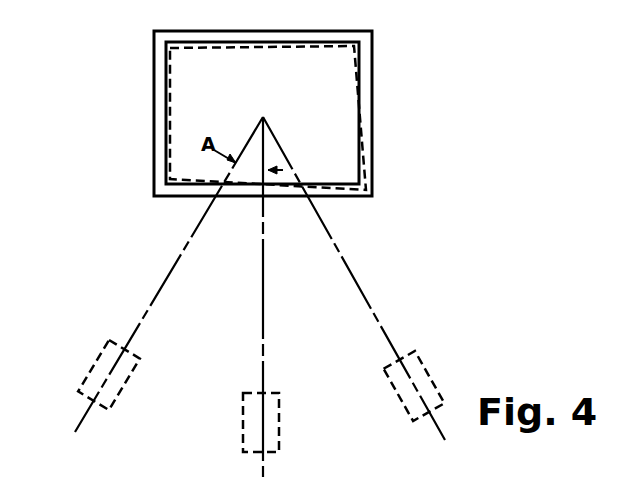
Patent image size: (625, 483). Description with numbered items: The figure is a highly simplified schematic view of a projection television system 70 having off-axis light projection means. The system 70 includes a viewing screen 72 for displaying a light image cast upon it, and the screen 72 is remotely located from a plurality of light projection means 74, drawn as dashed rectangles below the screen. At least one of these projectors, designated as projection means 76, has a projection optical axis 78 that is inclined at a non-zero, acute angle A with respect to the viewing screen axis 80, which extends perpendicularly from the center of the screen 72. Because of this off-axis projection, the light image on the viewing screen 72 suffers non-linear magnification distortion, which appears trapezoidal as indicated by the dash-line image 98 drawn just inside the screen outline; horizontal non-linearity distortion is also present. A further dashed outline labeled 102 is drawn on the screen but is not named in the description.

The projection television system 70 is at (86, 98).
The viewing screen 72 is at (154, 80).
The dash-line image 98 is at (362, 196).
The transparent film 102 is at (167, 45).
The projection optical axis 78 is at (166, 284).
The viewing screen axis 80 is at (263, 291).
The light projection means 76 is at (88, 377).
The light projection means 74 is at (242, 425).